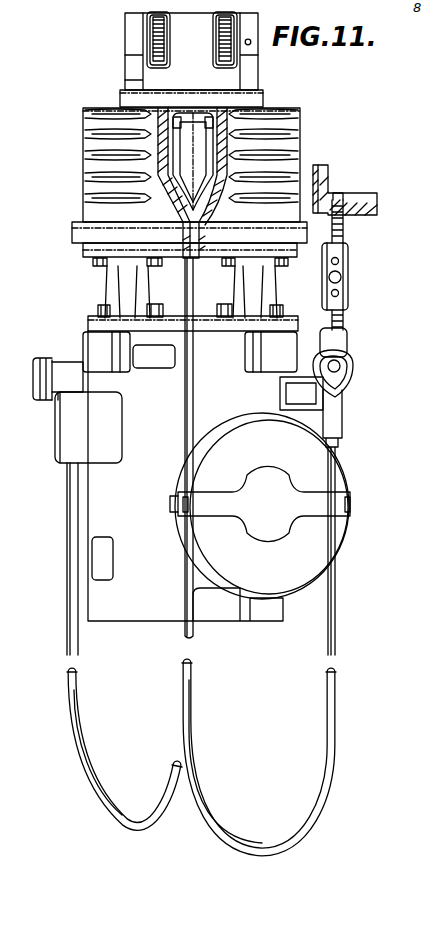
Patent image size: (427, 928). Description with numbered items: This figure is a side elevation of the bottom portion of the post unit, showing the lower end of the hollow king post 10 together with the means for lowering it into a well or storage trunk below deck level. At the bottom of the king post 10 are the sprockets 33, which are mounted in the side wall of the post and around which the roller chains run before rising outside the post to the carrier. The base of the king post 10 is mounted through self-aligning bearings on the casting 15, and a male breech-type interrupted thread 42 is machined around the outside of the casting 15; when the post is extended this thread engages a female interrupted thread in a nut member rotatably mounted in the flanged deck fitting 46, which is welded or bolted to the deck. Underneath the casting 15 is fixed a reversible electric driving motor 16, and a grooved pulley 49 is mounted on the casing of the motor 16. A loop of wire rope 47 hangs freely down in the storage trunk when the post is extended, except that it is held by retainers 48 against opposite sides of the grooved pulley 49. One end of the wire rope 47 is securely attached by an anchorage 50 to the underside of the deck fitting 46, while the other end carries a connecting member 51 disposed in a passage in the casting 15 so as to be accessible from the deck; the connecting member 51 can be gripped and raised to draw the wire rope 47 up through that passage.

The king post 10 is at (202, 74).
The casting 15 is at (300, 140).
The reversible electric driving motor 16 is at (113, 482).
The sprockets 33 is at (225, 42).
The male breech-type interrupted thread 42 is at (89, 181).
The flanged deck fitting 46 is at (376, 208).
The wire rope 47 is at (333, 697).
The retainers 48 is at (172, 500).
The grooved pulley 49 is at (318, 540).
The anchorage 50 is at (345, 283).
The connecting member 51 is at (200, 147).